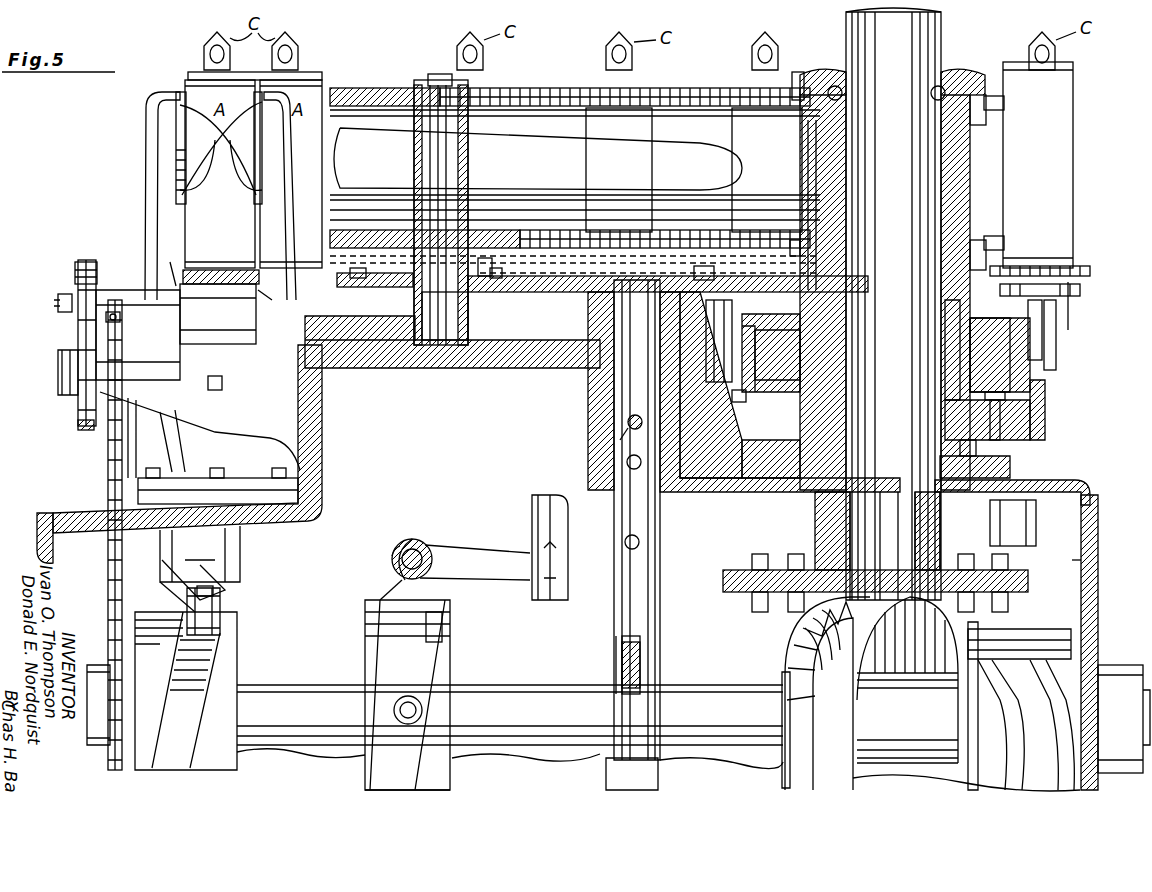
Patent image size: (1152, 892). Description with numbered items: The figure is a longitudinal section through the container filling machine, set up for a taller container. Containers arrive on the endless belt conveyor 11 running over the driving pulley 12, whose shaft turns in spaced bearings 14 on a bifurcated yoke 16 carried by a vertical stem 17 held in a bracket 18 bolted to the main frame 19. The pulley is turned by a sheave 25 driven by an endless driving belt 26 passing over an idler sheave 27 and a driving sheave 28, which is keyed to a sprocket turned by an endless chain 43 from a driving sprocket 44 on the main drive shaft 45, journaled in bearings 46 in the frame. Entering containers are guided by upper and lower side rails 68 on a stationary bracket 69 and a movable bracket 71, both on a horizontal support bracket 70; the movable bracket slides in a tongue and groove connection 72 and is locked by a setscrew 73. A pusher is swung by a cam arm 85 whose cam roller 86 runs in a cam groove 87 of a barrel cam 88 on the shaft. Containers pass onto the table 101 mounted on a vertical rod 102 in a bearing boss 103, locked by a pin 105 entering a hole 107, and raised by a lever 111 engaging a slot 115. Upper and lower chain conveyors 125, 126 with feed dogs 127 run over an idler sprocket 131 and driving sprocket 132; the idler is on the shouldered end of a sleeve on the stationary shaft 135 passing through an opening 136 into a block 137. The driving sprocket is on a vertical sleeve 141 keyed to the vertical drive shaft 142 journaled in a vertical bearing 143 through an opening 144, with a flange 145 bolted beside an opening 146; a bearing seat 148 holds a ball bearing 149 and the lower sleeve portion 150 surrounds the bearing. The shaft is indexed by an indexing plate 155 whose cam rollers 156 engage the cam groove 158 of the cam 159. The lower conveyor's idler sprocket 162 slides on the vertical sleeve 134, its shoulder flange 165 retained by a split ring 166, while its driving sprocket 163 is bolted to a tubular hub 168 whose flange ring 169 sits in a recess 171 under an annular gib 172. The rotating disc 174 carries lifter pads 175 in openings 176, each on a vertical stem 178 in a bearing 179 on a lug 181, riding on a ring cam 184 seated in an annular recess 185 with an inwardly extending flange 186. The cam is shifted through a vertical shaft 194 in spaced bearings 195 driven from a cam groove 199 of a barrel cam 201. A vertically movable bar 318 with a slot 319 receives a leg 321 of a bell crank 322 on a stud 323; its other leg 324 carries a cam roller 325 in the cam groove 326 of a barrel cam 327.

The endless belt conveyor 11 is at (213, 275).
The driving pulley 12 is at (1085, 798).
The spaced bearings 14 is at (172, 292).
The bifurcated yoke 16 is at (172, 332).
The vertical stem 17 is at (240, 538).
The bracket 18 is at (200, 448).
The main frame 19 is at (56, 516).
The sheave 25 is at (72, 270).
The endless driving belt 26 is at (78, 428).
The idler sheave 27 is at (60, 300).
The driving sheave 28 is at (66, 408).
The endless chain 43 is at (110, 462).
The driving sprocket 44 is at (98, 760).
The drive shaft 45 is at (306, 700).
The bearings 46 is at (1124, 719).
The side rails 68 is at (240, 130).
The vertical stationary bracket 69 is at (284, 210).
The horizontal support bracket 70 is at (280, 404).
The movable bracket 71 is at (156, 160).
The tongue and groove connection 72 is at (214, 390).
The setscrew 73 is at (120, 322).
The cam arm 85 is at (186, 576).
The cam roller 86 is at (214, 596).
The cam groove 87 is at (204, 684).
The barrel cam 88 is at (215, 756).
The stationary table 101 is at (548, 288).
The vertical rod 102 is at (632, 398).
The upper bearing boss 103 is at (600, 442).
The pin 105 is at (628, 422).
The hole 107 is at (626, 462).
The lever 111 is at (640, 660).
The slot 115 is at (618, 648).
The upper endless chain conveyor 125 is at (564, 100).
The lower endless chain conveyor 126 is at (610, 244).
The feed dogs 127 is at (1002, 106).
The idler sprocket 131 is at (500, 102).
The driving sprocket 132 is at (797, 80).
The vertical sleeve 134 is at (460, 144).
The stationary shaft 135 is at (440, 164).
The opening 136 is at (444, 302).
The block 137 is at (378, 368).
The vertical sleeve 141 is at (938, 54).
The vertical drive shaft 142 is at (902, 32).
The vertical bearing 143 is at (930, 178).
The opening 144 is at (806, 490).
The flange 145 is at (1030, 458).
The opening 146 is at (942, 496).
The bearing seat 148 is at (942, 80).
The ball bearing 149 is at (962, 92).
The lower sleeve portion 150 is at (810, 134).
The indexing plate 155 is at (722, 578).
The cam rollers 156 is at (776, 600).
The cam groove 158 is at (786, 660).
The cam 159 is at (880, 690).
The idler sprocket 162 is at (486, 258).
The driving sprocket 163 is at (792, 240).
The shoulder flange 165 is at (377, 288).
The split ring 166 is at (502, 276).
The tubular hub 168 is at (958, 330).
The flange ring 169 is at (950, 446).
The recess 171 is at (984, 408).
The annular gib 172 is at (1020, 398).
The rotating disc 174 is at (1082, 290).
The lifter pad 175 is at (712, 278).
The openings 176 is at (1082, 290).
The vertical stem 178 is at (1046, 332).
The bearing 179 is at (1060, 354).
The lug 181 is at (886, 353).
The ring cam 184 is at (1024, 412).
The annular recess 185 is at (742, 470).
The inwardly extending flange 186 is at (715, 430).
The vertical shaft 194 is at (1084, 562).
The spaced bearings 195 is at (1024, 532).
The cam groove 199 is at (1010, 664).
The barrel cam 201 is at (1060, 636).
The vertically movable bar 318 is at (544, 510).
The slot 319 is at (556, 546).
The leg 321 is at (462, 552).
The bell crank 322 is at (412, 540).
The stud 323 is at (392, 556).
The leg 324 is at (406, 588).
The cam roller 325 is at (400, 762).
The cam groove 326 is at (444, 634).
The barrel cam 327 is at (450, 665).